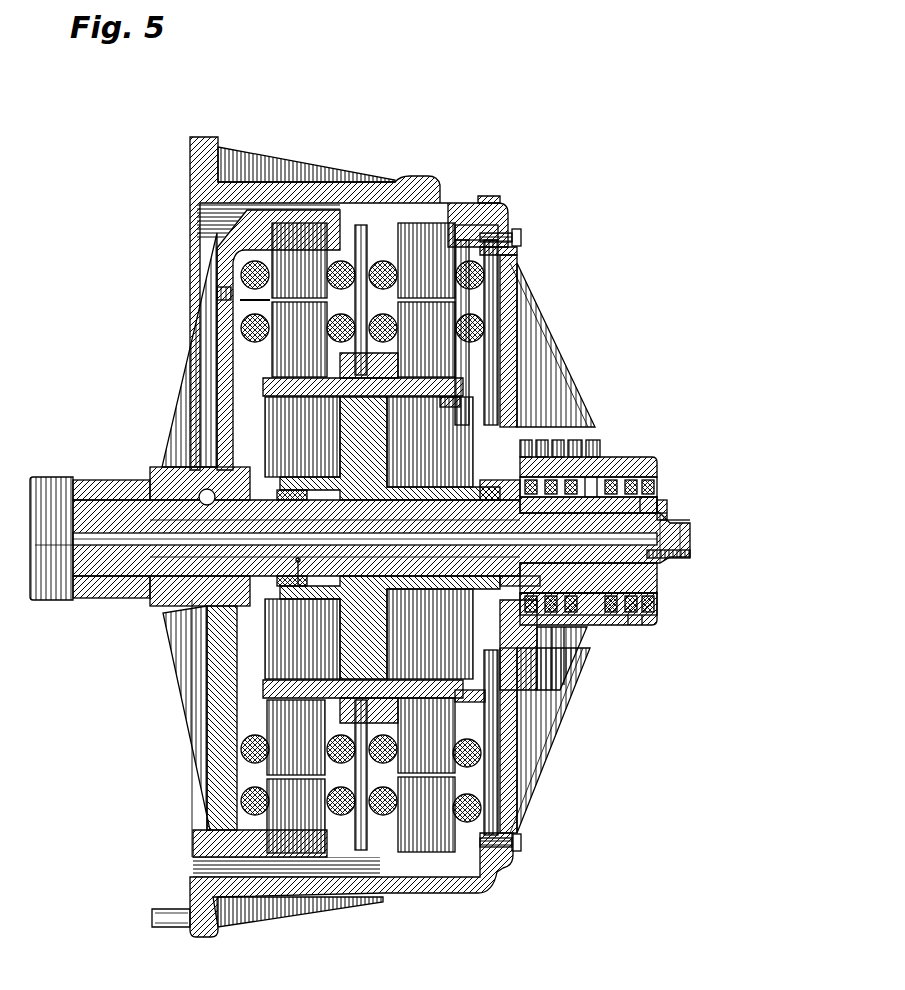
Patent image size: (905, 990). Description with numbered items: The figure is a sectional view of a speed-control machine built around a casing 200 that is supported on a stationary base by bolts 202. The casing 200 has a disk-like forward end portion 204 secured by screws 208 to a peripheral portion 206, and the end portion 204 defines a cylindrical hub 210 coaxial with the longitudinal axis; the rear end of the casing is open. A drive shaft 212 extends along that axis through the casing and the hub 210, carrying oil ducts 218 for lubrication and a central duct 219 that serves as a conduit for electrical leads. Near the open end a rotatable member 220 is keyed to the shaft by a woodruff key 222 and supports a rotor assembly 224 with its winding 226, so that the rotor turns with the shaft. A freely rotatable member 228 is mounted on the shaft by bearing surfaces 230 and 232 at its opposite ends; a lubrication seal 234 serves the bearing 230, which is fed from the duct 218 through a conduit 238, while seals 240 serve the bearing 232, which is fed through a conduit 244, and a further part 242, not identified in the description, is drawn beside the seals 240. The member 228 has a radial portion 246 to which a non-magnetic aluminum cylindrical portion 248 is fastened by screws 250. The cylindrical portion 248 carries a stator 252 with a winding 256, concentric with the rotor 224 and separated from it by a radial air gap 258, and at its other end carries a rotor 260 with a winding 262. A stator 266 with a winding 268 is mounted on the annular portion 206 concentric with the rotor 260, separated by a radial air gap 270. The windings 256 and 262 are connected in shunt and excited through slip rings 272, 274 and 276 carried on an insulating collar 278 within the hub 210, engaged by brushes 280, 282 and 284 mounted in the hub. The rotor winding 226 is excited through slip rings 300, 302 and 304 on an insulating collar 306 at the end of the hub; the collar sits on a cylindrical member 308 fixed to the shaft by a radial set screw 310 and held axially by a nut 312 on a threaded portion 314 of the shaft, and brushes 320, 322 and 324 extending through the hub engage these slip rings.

The casing 200 is at (405, 178).
The bolts 202 is at (250, 158).
The forward end portion 204 is at (518, 275).
The peripheral portion 206 is at (468, 870).
The screws 208 is at (522, 237).
The cylindrical hub 210 is at (640, 462).
The drive shaft 212 is at (690, 536).
The oil ducts 218 is at (100, 480).
The central duct 219 is at (405, 538).
The rotatable member 220 is at (215, 343).
The woodruff key 222 is at (200, 470).
The rotor assembly 224 is at (290, 236).
The winding 226 is at (285, 270).
The freely rotatable member 228 is at (385, 465).
The bearing surface 230 is at (318, 490).
The bearing surface 232 is at (480, 482).
The lubrication seal 234 is at (282, 490).
The conduit 238 is at (300, 588).
The seals 240 is at (592, 442).
The ring 242 is at (577, 440).
The conduit 244 is at (548, 561).
The radial portion 246 is at (465, 402).
The cylindrical portion 248 is at (462, 703).
The screws 250 is at (470, 392).
The stator 252 is at (290, 372).
The winding 256 is at (262, 320).
The radial air gap 258 is at (262, 300).
The rotor 260 is at (478, 352).
The winding 262 is at (477, 328).
The stator 266 is at (495, 212).
The winding 268 is at (517, 252).
The radial air gap 270 is at (480, 302).
The slip ring 272 is at (527, 440).
The slip ring 274 is at (542, 440).
The slip ring 276 is at (558, 452).
The insulating collar 278 is at (508, 505).
The brush 280 is at (543, 645).
The brush 282 is at (560, 645).
The brush 284 is at (575, 650).
The slip ring 300 is at (612, 475).
The slip ring 302 is at (628, 475).
The slip ring 304 is at (640, 475).
The insulating collar 306 is at (660, 482).
The cylindrical member 308 is at (660, 575).
The radial set screw 310 is at (665, 503).
The nut 312 is at (668, 510).
The threaded portion 314 is at (670, 522).
The brush 320 is at (612, 625).
The brush 322 is at (625, 625).
The brush 324 is at (640, 625).